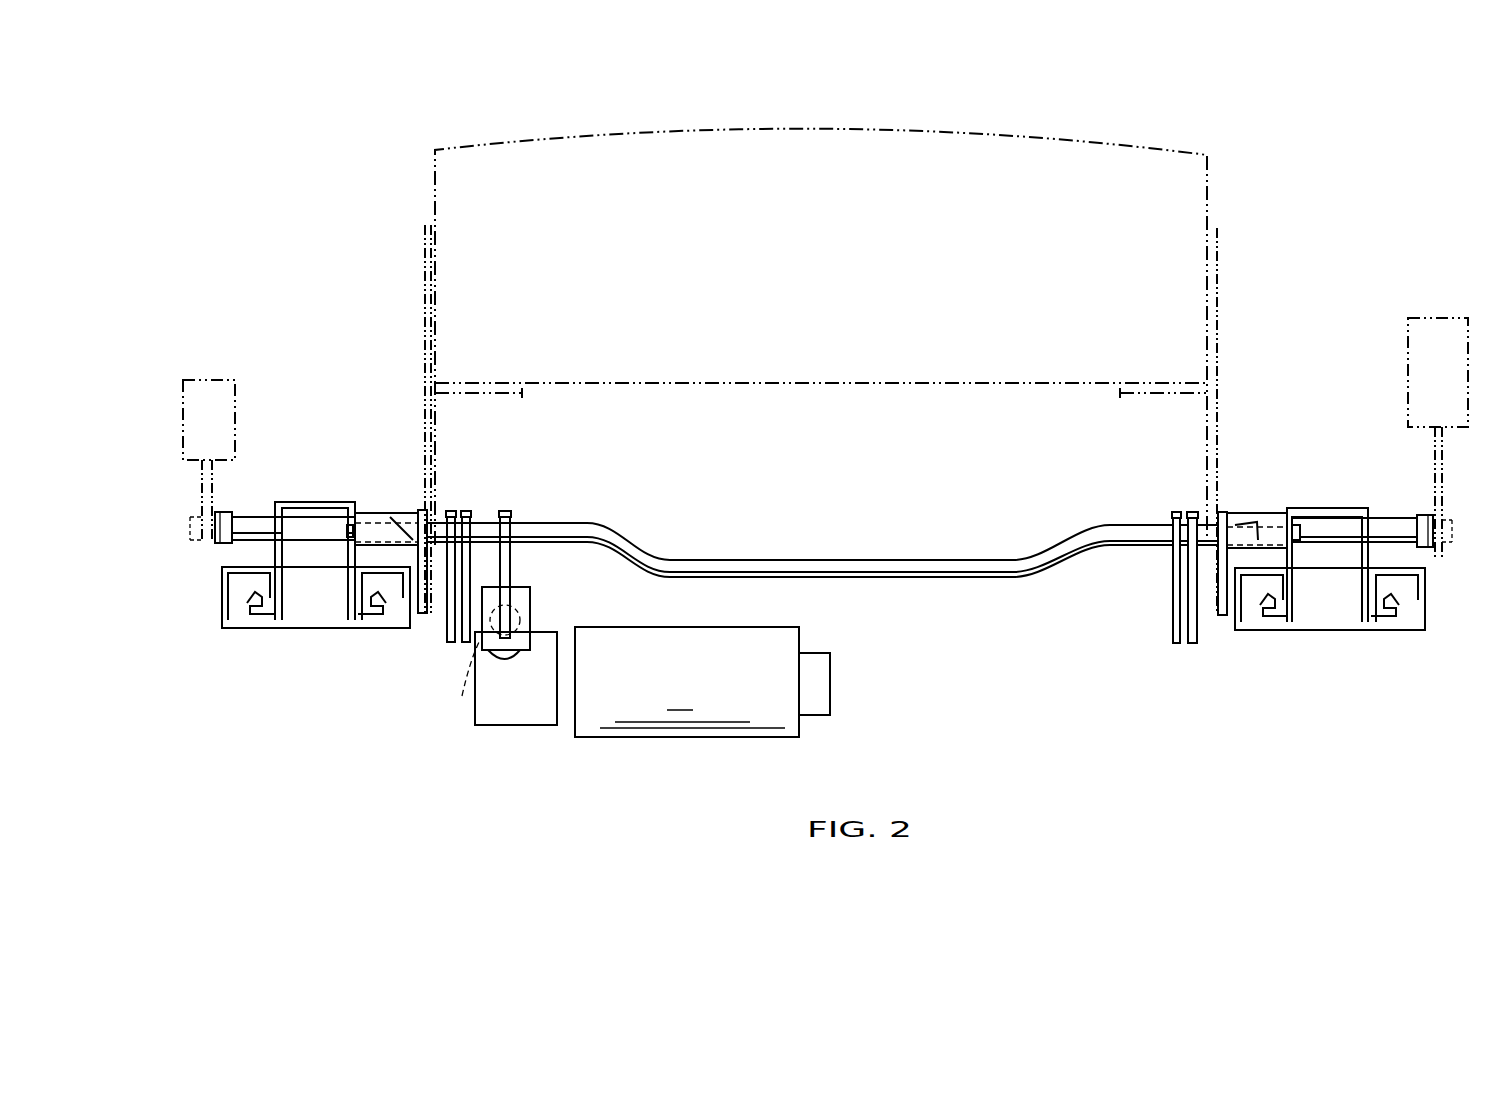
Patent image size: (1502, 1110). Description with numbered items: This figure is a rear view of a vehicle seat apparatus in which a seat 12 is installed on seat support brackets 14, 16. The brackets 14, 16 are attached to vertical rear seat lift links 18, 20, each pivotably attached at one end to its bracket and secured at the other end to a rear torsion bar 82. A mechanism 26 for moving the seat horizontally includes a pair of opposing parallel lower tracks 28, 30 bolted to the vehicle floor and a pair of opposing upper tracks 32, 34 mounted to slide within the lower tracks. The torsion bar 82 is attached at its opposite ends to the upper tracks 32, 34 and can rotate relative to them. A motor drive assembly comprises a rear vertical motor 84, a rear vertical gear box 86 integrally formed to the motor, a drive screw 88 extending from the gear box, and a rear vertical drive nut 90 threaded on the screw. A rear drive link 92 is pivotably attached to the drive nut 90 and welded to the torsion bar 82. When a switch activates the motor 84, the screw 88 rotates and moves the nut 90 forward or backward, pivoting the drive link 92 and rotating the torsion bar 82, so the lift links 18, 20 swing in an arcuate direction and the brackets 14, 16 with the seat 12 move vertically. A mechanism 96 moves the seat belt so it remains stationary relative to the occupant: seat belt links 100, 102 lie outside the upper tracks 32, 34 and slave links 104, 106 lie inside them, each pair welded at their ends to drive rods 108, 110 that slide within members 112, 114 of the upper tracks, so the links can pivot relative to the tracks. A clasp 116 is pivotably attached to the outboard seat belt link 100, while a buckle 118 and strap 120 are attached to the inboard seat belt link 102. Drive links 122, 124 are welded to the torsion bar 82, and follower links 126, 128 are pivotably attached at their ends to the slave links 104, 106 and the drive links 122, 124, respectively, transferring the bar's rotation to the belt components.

The seat 12 is at (470, 143).
The seat support bracket 14 is at (425, 350).
The seat support bracket 16 is at (1217, 262).
The rear seat lift link 18 is at (420, 613).
The rear seat lift link 20 is at (1222, 615).
The mechanism for moving seat horizontally 26 is at (211, 646).
The lower track 28 is at (235, 628).
The lower track 30 is at (1390, 630).
The upper track 32 is at (316, 502).
The upper track 34 is at (1338, 508).
The rear torsion bar 82 is at (412, 522).
The rear vertical motor 84 is at (704, 689).
The rear vertical gear box 86 is at (534, 700).
The drive screw 88 is at (464, 680).
The rear vertical drive nut 90 is at (532, 615).
The rear drive link 92 is at (512, 565).
The mechanism for moving seat belt 96 is at (414, 658).
The seat belt link 100 is at (225, 512).
The seat belt link 102 is at (1428, 515).
The slave link 104 is at (451, 511).
The slave link 106 is at (1192, 512).
The drive rod 108 is at (190, 540).
The drive rod 110 is at (1327, 535).
The member of upper track 112 is at (400, 520).
The member of upper track 114 is at (1245, 515).
The clasp 116 is at (225, 425).
The buckle 118 is at (1425, 358).
The strap 120 is at (1435, 455).
The drive link 122 is at (468, 530).
The drive link 124 is at (1173, 560).
The follower link 126 is at (458, 642).
The follower link 128 is at (1192, 643).